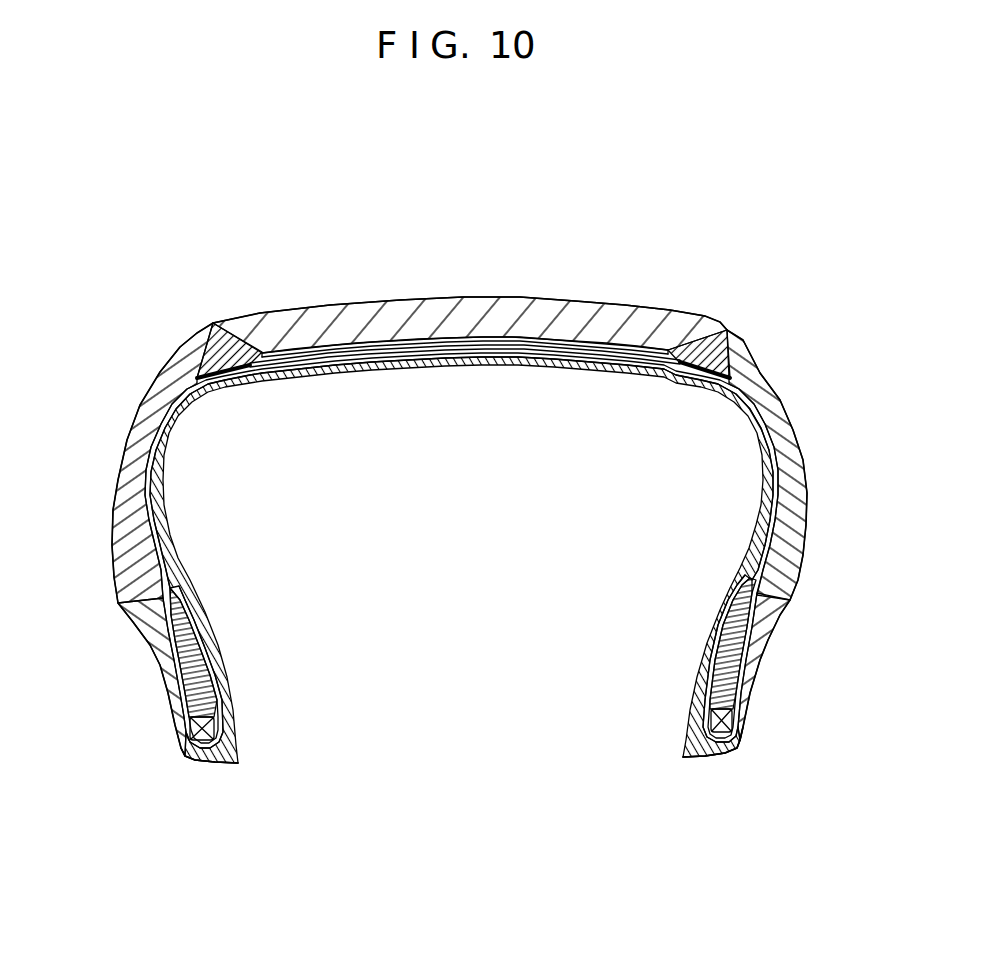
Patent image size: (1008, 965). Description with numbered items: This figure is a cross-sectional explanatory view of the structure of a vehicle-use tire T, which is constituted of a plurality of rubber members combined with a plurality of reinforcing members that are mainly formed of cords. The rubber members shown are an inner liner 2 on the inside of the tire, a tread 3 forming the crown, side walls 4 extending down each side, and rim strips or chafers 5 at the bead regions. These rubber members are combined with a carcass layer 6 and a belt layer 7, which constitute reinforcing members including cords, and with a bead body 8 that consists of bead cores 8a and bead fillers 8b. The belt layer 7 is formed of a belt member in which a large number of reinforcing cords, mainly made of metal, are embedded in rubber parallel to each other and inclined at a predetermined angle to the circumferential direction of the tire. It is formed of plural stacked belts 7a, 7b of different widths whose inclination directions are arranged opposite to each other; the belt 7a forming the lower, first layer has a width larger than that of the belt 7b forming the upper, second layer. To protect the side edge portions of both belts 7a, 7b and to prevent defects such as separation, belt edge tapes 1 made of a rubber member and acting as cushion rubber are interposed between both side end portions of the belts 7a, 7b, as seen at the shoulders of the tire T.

The tire T is at (539, 268).
The belt edge tape 1 is at (190, 372).
The inner liner 2 is at (456, 365).
The tread 3 is at (423, 300).
The side wall 4 is at (150, 400).
The rim strip or chafer 5 is at (204, 758).
The carcass layer 6 is at (720, 640).
The belt layer 7 is at (461, 263).
The belt 7a is at (287, 356).
The belt 7b is at (330, 345).
The bead body 8 is at (529, 671).
The bead core 8a is at (517, 722).
The bead filler 8b is at (199, 680).